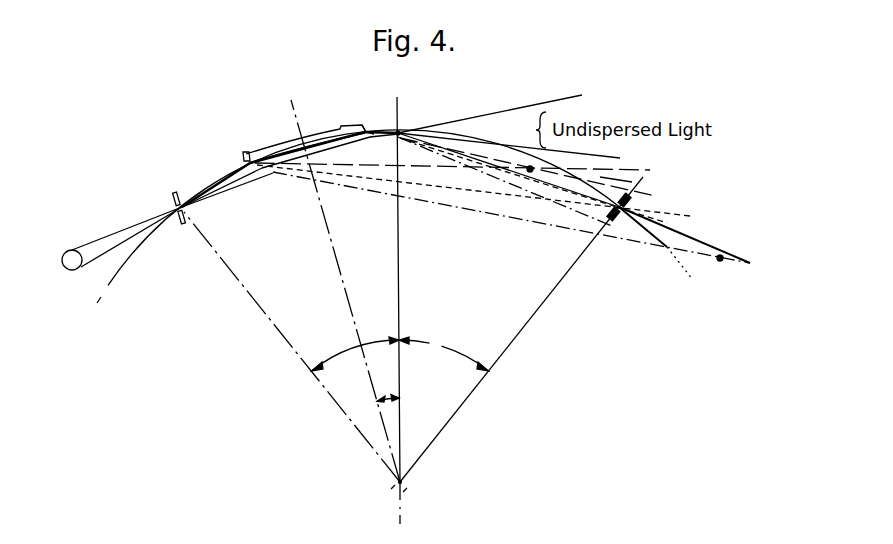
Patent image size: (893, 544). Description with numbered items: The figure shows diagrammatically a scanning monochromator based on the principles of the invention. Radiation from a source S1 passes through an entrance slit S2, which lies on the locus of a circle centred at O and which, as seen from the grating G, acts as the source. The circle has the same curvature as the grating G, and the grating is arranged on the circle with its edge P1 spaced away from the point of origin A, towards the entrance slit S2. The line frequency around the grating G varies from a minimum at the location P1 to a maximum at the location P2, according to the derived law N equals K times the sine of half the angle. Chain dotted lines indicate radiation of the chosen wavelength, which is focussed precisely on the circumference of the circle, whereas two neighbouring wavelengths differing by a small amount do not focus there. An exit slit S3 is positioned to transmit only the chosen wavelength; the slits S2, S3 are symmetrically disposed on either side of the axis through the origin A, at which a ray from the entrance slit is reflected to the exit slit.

The light source S1 is at (73, 250).
The entrance slit S2 is at (176, 192).
The exit slit S3 is at (632, 198).
The grating edge P1 is at (374, 128).
The grating edge location of maximum line frequency P2 is at (248, 155).
The grating G is at (344, 129).
The point of origin A is at (400, 131).
The center of rotation O is at (416, 490).